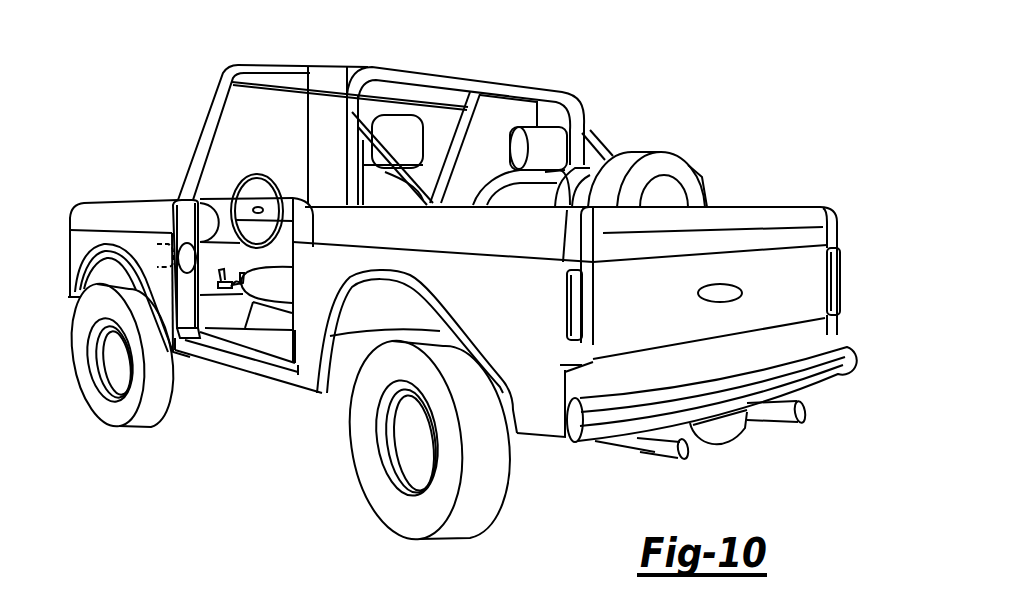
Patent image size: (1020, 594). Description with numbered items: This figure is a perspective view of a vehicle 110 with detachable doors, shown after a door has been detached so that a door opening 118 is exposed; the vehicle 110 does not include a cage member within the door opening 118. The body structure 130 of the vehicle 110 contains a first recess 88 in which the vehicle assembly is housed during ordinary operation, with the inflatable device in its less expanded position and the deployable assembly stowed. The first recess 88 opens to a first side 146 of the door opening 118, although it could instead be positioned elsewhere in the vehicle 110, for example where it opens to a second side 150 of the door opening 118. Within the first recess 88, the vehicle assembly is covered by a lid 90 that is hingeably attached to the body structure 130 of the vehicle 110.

The vehicle 110 is at (651, 61).
The body structure 130 is at (170, 200).
The first recess 88 is at (157, 254).
The lid 90 is at (197, 259).
The first side 146 is at (185, 311).
The door opening 118 is at (230, 316).
The second side 150 is at (292, 328).